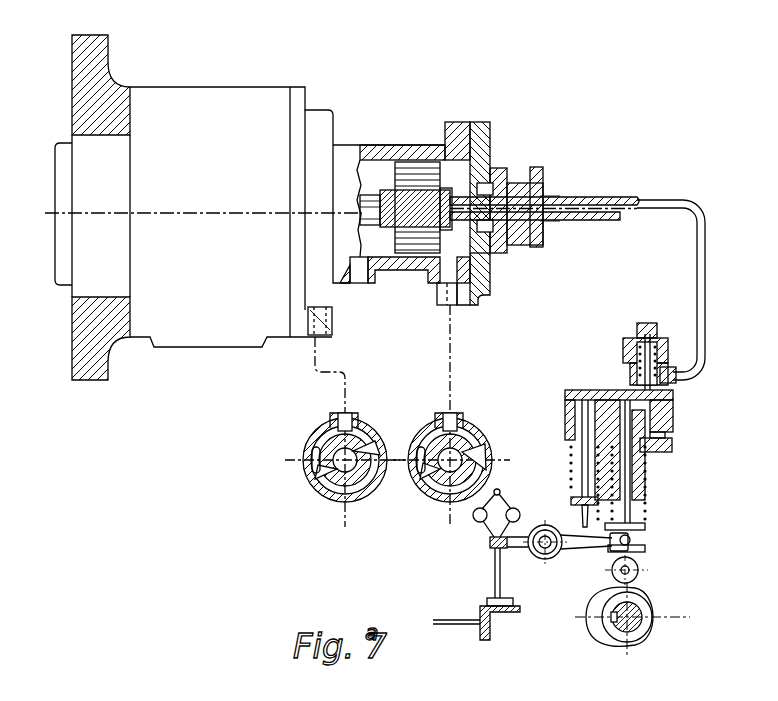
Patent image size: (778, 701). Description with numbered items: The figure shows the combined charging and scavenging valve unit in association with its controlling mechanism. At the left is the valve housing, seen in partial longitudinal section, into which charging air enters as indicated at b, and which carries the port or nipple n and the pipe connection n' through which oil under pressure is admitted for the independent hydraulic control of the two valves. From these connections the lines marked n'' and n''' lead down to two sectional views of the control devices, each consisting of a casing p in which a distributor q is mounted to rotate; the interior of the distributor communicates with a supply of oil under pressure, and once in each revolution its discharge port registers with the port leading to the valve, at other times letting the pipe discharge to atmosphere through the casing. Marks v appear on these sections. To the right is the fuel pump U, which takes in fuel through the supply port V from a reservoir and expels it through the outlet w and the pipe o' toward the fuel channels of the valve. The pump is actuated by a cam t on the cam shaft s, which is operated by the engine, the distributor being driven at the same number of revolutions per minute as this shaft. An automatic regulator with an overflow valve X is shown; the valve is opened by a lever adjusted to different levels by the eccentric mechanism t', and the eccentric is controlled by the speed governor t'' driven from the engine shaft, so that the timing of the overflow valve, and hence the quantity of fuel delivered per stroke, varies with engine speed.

The pump housing b is at (358, 294).
The port or nipple n is at (463, 310).
The pipe n' is at (335, 330).
The section line n'' is at (450, 416).
The section line n''' is at (345, 432).
The casing p is at (357, 427).
The distributor q is at (330, 489).
The supply port v is at (318, 468).
The pipe o' is at (683, 290).
The outlet w is at (680, 382).
The overflow valve X is at (568, 418).
The supply port V is at (677, 444).
The fuel pump U is at (605, 437).
The speed governor t'' is at (482, 556).
The eccentric mechanism t' is at (577, 555).
The cam t is at (628, 618).
The cam shaft s is at (640, 622).